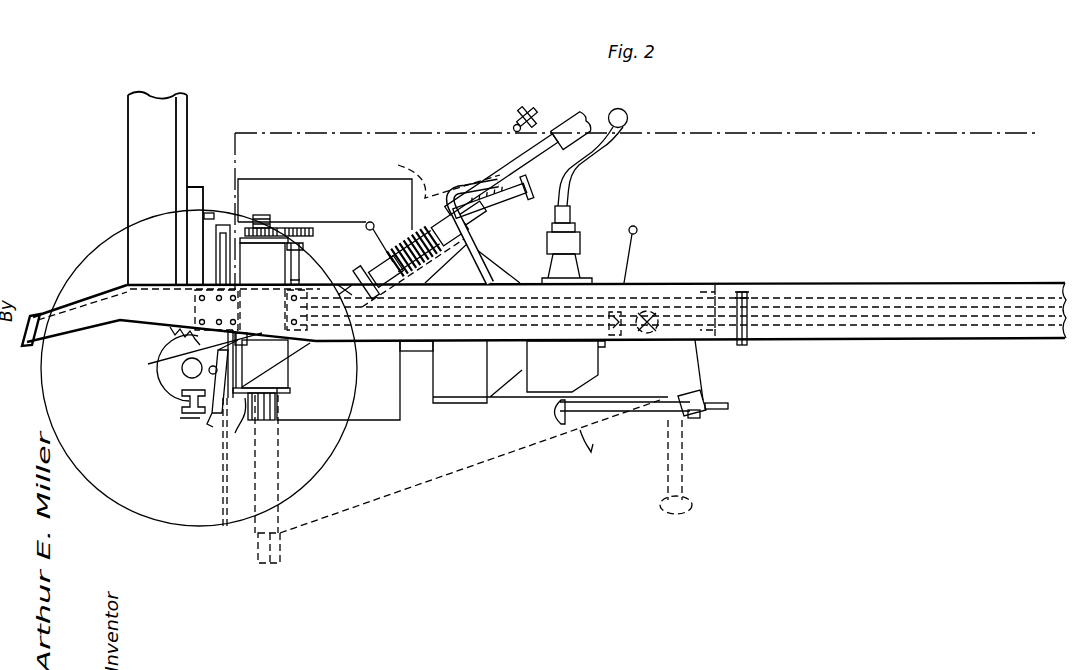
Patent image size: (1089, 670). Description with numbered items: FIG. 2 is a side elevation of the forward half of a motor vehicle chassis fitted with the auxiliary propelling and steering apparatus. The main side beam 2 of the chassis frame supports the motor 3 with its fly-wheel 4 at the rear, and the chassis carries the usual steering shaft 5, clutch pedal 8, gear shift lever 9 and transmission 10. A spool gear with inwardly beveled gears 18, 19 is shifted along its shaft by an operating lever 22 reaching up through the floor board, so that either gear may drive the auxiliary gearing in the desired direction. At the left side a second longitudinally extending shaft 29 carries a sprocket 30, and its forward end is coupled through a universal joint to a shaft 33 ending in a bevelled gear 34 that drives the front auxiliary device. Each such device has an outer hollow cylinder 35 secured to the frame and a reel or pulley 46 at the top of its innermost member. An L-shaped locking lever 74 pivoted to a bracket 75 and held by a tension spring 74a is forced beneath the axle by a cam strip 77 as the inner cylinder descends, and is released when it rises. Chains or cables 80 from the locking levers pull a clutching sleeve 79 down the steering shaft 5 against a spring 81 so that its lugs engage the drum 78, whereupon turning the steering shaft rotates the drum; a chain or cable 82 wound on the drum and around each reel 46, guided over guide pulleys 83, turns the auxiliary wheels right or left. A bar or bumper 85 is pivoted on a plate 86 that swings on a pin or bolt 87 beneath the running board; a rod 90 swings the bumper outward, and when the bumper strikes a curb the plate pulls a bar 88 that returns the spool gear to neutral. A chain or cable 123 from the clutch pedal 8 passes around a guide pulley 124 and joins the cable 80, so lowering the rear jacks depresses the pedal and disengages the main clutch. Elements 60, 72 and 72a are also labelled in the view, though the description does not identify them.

The main side beam 2 is at (882, 338).
The motor 3 is at (340, 182).
The fly-wheel 4 is at (468, 400).
The steering shaft 5 is at (574, 124).
The clutch pedal 8 is at (512, 196).
The gear shift lever 9 is at (628, 118).
The transmission 10 is at (574, 391).
The inwardly beveled gear 18 is at (636, 337).
The inwardly beveled gear 19 is at (655, 335).
The operating lever 22 is at (634, 250).
The second longitudinally extending shaft 29 is at (785, 320).
The sprocket 30 is at (750, 350).
The shaft 33 is at (418, 352).
The bevelled gear 34 is at (314, 343).
The outer hollow cylinder 35 is at (262, 360).
The reel or pulley 46 is at (262, 218).
The support 60 is at (288, 371).
The center line 72 is at (421, 127).
The cross pin 72a is at (528, 106).
The locking lever 74 is at (212, 425).
The tension spring 74a is at (189, 367).
The bracket 75 is at (168, 328).
The cam strip 77 is at (241, 426).
The drum 78 is at (405, 248).
The clutching sleeve 79 is at (470, 234).
The chains or cables 80 is at (880, 297).
The spring 81 is at (486, 180).
The chain or cable 82 is at (340, 216).
The guide pulleys 83 is at (370, 222).
The bar or bumper 85 is at (640, 418).
The plate 86 is at (722, 400).
The pin or bolt 87 is at (700, 415).
The bar 88 is at (701, 364).
The rod 90 is at (515, 410).
The chain or cable 123 is at (443, 172).
The guide pulley 124 is at (339, 284).